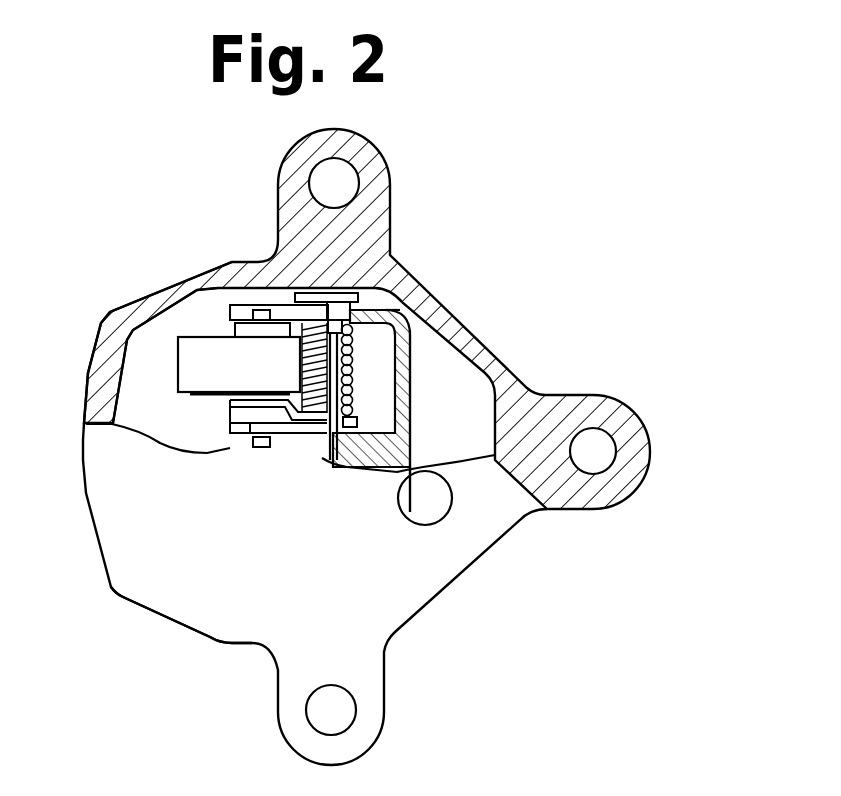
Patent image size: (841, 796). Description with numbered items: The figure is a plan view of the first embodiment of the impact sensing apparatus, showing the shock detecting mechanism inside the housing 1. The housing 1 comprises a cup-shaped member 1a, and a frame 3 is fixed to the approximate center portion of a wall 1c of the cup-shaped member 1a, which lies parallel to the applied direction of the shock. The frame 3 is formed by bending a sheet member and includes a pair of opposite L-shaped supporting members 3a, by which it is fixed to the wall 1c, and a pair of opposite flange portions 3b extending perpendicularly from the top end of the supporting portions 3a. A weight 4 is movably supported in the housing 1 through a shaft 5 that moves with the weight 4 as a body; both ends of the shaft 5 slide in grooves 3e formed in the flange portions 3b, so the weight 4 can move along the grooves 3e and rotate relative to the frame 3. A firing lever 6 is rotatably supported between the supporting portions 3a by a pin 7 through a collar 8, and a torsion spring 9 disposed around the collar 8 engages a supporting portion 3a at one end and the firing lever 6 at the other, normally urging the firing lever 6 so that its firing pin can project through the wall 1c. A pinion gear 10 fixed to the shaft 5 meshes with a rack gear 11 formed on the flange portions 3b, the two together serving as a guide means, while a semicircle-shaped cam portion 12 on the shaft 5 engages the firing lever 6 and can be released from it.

The housing 1 is at (503, 545).
The cup-shaped member 1a is at (117, 340).
The wall 1c is at (243, 578).
The frame 3 is at (412, 376).
The L-shaped supporting members 3a is at (400, 302).
The flange portions 3b is at (233, 445).
The grooves 3e is at (238, 307).
The weight 4 is at (200, 355).
The shaft 5 is at (273, 443).
The firing lever 6 is at (233, 408).
The pin 7 is at (344, 292).
The collar 8 is at (343, 413).
The torsion spring 9 is at (353, 347).
The pinion gear 10 is at (262, 312).
The rack gear 11 is at (235, 318).
The semicircle-shaped cam portion 12 is at (228, 417).